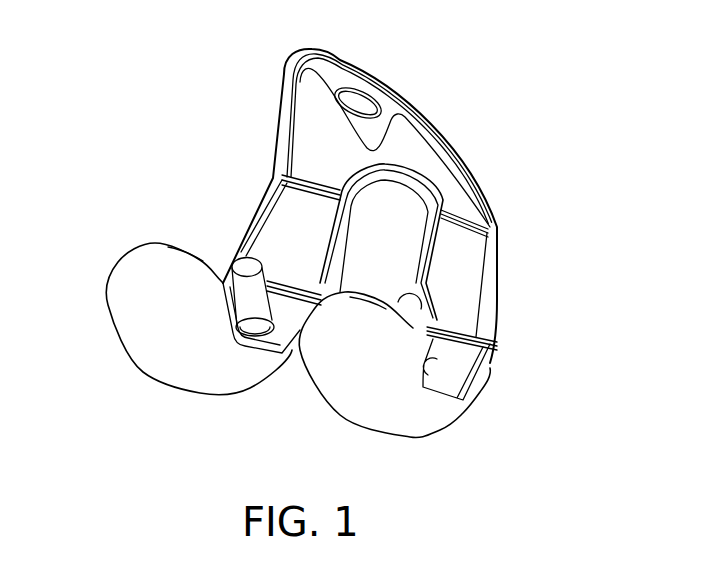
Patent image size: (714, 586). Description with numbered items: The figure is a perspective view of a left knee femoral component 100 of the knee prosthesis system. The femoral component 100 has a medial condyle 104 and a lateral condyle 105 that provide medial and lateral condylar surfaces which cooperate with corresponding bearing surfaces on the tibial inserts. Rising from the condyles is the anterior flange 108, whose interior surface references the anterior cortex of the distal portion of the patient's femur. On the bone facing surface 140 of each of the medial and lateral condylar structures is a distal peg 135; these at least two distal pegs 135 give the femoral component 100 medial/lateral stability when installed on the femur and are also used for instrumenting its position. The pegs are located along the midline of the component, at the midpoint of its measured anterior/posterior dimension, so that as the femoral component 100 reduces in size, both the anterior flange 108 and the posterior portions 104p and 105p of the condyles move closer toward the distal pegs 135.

The femoral component 100 is at (524, 41).
The anterior flange 108 is at (431, 132).
The medial condyle 104 is at (352, 416).
The posterior portion of the medial condyle 104p is at (338, 380).
The lateral condyle 105 is at (167, 368).
The posterior portion of the lateral condyle 105p is at (138, 323).
The distal pegs 135 is at (243, 267).
The bone facing surface 140 is at (443, 381).